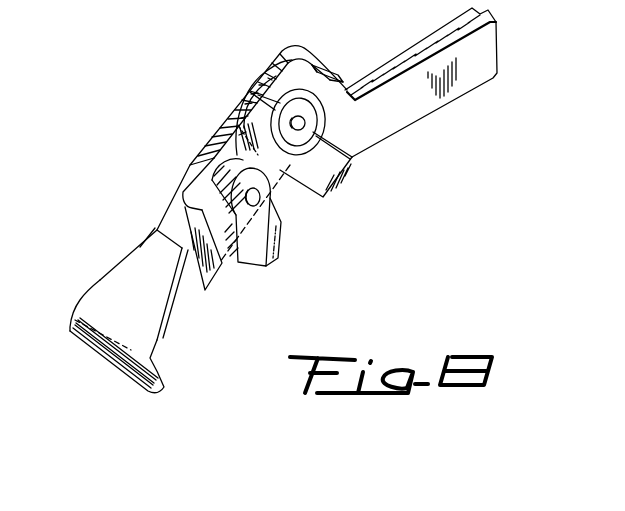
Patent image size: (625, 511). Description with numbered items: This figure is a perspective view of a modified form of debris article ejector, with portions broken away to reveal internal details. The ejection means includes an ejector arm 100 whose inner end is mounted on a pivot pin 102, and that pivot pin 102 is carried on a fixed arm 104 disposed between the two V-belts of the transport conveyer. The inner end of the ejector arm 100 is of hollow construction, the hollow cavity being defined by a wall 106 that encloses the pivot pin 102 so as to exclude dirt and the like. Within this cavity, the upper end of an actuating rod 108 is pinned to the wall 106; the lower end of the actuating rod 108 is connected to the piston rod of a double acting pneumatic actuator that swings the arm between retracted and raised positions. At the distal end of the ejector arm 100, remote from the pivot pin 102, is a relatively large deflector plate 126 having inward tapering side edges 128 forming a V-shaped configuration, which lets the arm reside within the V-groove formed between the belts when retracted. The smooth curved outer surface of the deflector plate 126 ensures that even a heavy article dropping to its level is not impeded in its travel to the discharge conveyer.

The ejector arm 100 is at (176, 168).
The pivot pin 102 is at (303, 122).
The fixed arm 104 is at (487, 50).
The wall 106 is at (331, 68).
The actuating rod 108 is at (282, 232).
The deflector plate 126 is at (100, 349).
The side edges 128 is at (139, 246).